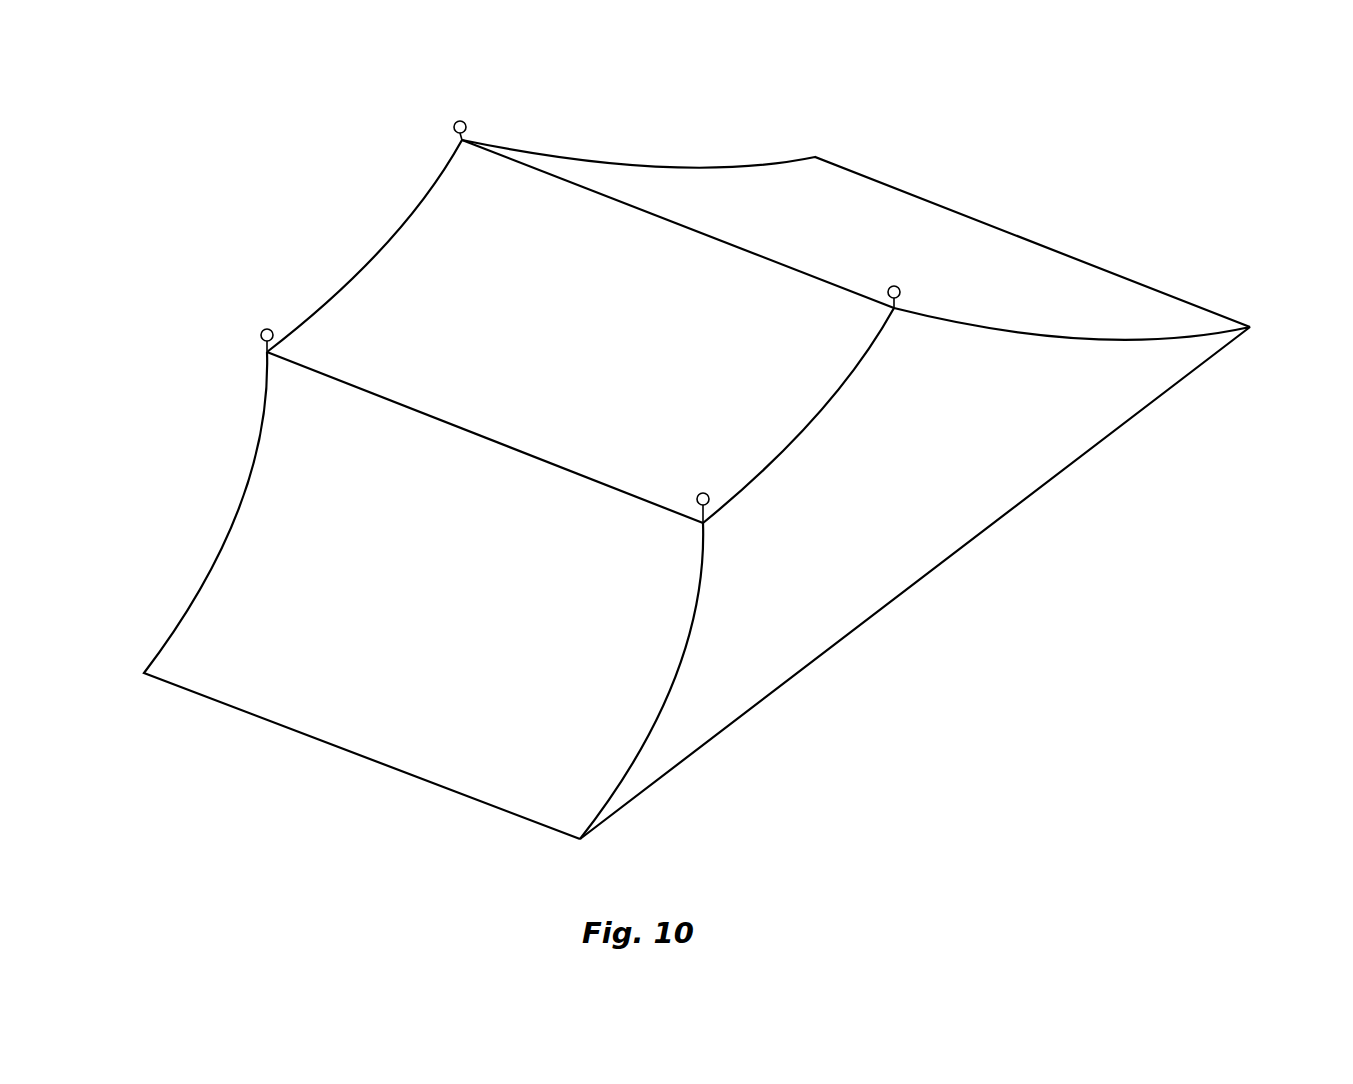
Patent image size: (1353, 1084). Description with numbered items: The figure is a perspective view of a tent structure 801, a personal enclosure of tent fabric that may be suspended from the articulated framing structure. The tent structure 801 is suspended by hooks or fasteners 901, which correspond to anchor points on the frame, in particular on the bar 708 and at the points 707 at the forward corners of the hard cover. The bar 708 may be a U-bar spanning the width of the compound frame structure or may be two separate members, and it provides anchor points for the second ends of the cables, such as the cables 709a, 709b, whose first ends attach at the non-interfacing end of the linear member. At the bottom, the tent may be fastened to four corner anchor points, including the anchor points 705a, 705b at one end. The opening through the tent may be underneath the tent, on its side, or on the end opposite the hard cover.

The point at end of cover 707 is at (701, 240).
The bar 708 is at (486, 447).
The anchor point 705a is at (949, 573).
The anchor point 705b is at (856, 222).
The cable 709a is at (625, 703).
The cable 709b is at (338, 595).
The tent structure 801 is at (393, 276).
The fasteners 901 is at (460, 120).